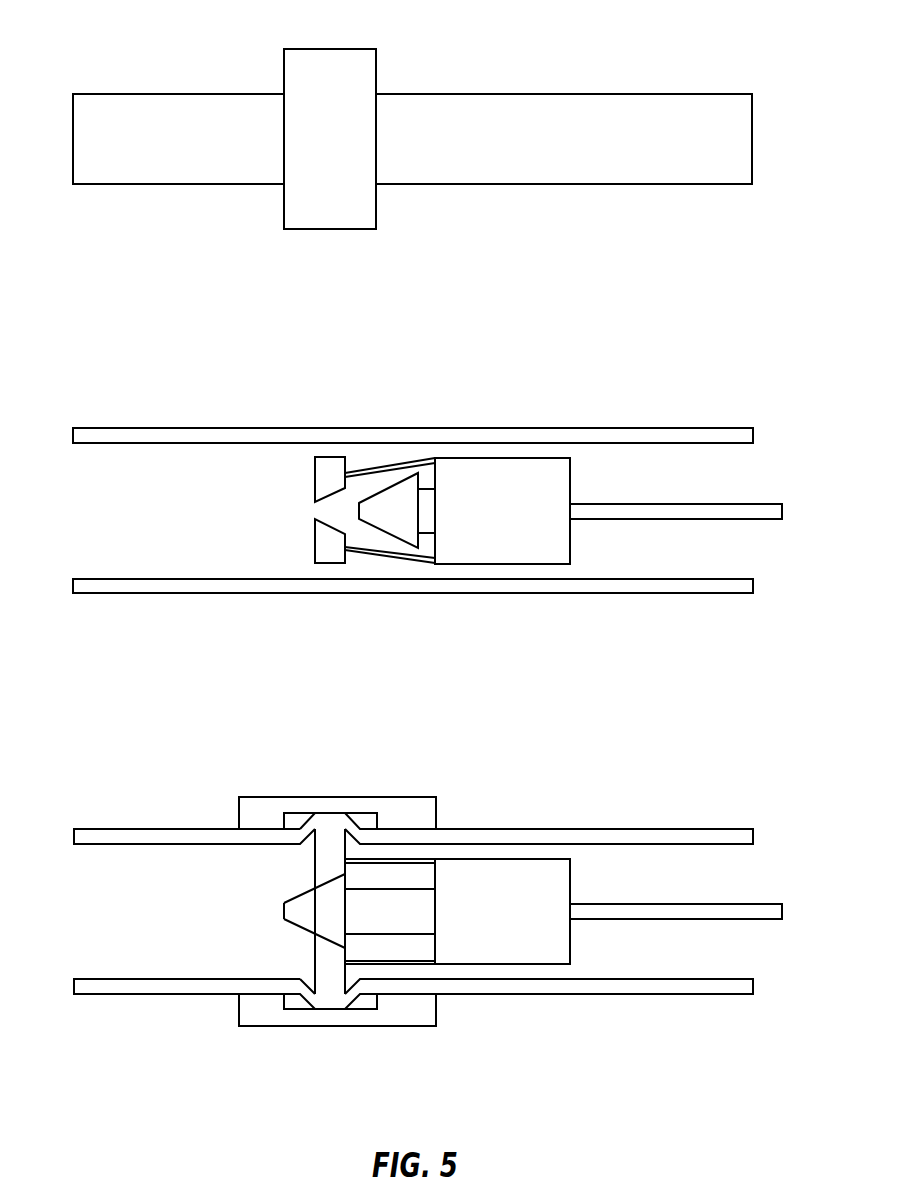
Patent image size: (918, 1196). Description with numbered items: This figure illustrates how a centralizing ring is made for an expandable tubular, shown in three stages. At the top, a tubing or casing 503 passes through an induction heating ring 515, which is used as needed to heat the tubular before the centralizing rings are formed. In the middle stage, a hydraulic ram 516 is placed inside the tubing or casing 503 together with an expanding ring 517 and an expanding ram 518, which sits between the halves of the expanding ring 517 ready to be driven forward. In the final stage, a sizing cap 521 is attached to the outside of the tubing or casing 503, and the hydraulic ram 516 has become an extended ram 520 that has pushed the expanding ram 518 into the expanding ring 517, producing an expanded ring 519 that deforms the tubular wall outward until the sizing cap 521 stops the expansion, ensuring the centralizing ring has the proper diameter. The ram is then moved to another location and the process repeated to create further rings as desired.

The tubing or casing 503 is at (706, 94).
The induction heating ring 515 is at (357, 49).
The hydraulic ram 516 is at (570, 527).
The expanding ring 517 is at (315, 500).
The expanding ram 518 is at (358, 506).
The expanded ring 519 is at (355, 822).
The extended ram 520 is at (570, 893).
The sizing cap 521 is at (340, 797).